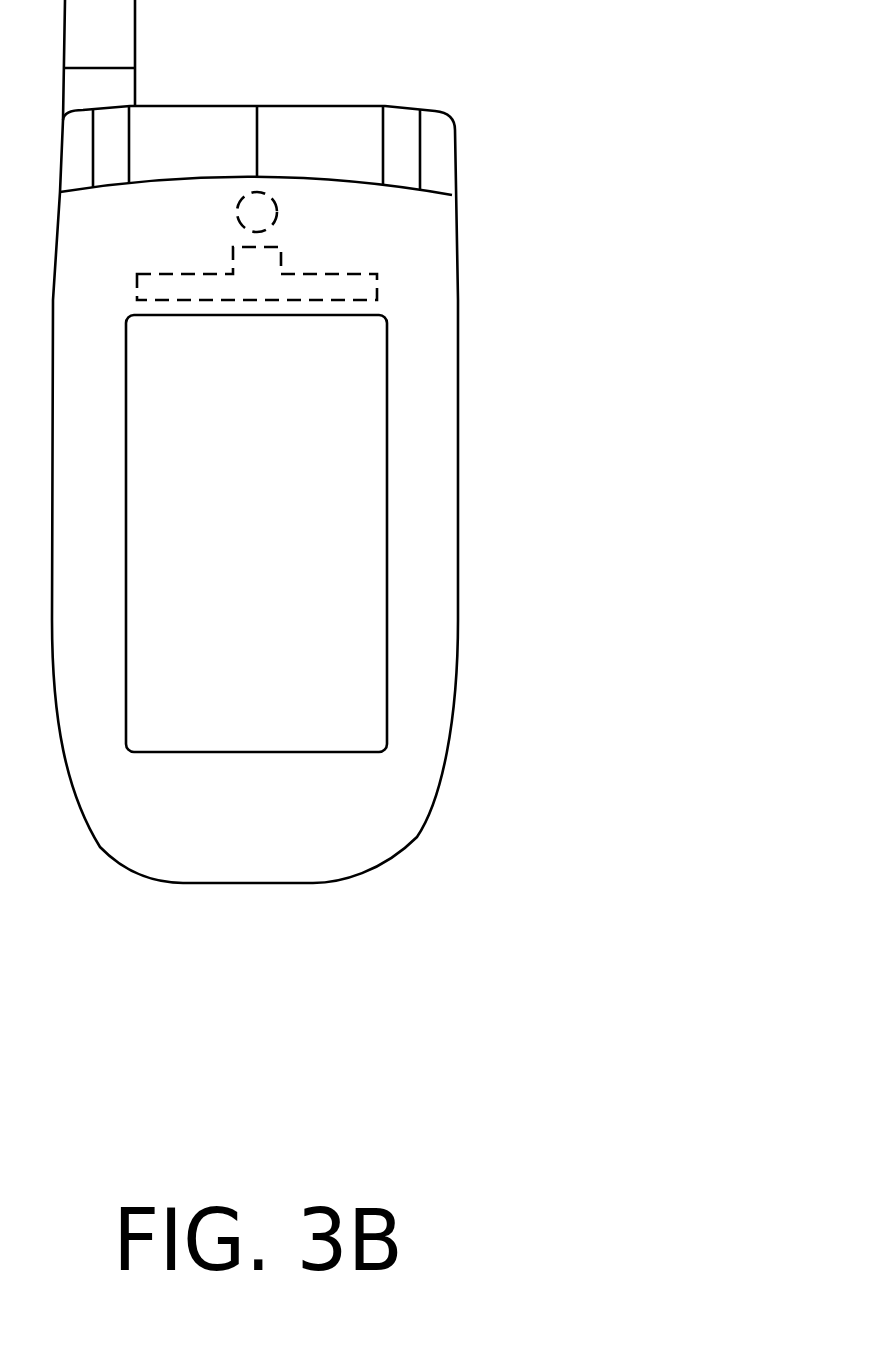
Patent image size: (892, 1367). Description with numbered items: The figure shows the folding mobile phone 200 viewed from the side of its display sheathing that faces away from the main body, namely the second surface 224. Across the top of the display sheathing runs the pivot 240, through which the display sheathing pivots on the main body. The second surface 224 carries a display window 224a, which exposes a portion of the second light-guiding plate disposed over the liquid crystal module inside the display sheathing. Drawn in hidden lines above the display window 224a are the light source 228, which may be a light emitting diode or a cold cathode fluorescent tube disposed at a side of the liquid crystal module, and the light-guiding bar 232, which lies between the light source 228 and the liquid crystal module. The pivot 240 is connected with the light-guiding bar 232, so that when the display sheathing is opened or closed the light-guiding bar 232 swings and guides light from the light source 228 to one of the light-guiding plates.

The folding mobile phone 200 is at (585, 1005).
The pivot 240 is at (437, 153).
The light source 228 is at (275, 219).
The light-guiding bar 232 is at (377, 284).
The second surface 224 is at (412, 468).
The display window 224a is at (358, 558).